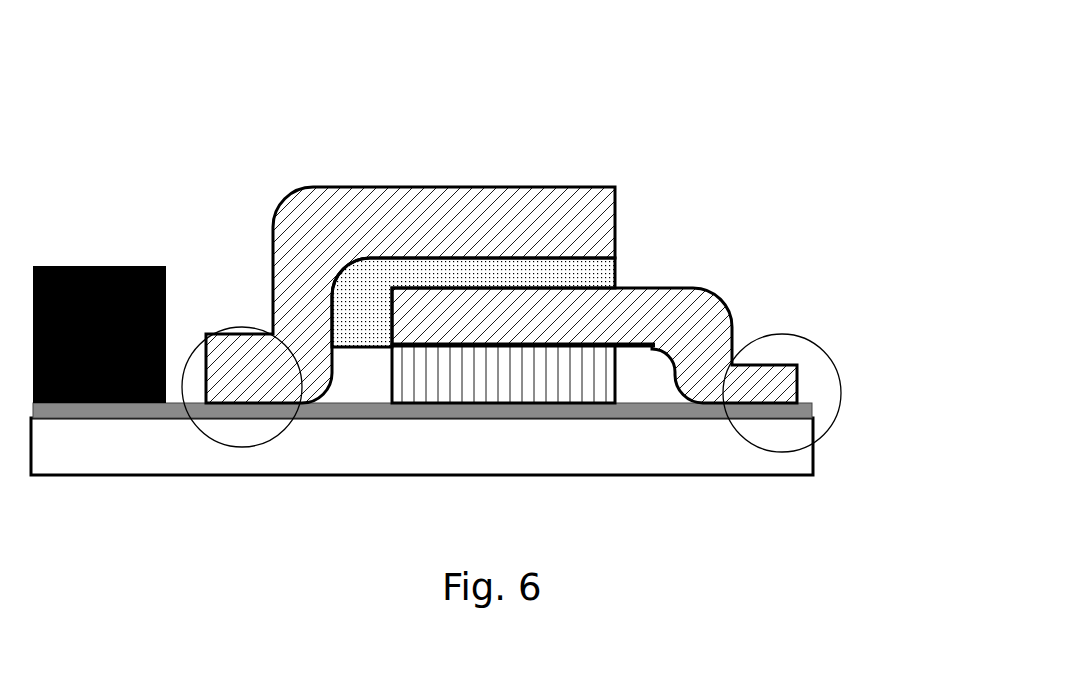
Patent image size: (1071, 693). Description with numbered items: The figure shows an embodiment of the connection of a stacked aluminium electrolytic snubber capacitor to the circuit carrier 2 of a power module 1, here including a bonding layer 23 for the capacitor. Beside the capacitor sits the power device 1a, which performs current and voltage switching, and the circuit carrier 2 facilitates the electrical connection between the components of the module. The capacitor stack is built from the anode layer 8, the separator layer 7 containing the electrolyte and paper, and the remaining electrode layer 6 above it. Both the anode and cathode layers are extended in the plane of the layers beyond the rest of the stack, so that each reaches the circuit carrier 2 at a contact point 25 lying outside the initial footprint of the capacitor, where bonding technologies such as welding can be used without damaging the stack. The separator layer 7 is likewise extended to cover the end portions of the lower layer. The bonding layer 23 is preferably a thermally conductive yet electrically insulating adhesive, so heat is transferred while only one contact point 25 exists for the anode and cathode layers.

The power module 1 is at (718, 77).
The power device 1a is at (123, 266).
The circuit carrier 2 is at (813, 450).
The extended capacitor layer 6 is at (615, 222).
The separator layer 7 is at (615, 278).
The anode layer 8 is at (797, 383).
The bonding layer 23 is at (615, 365).
The contact point 25 is at (240, 307).